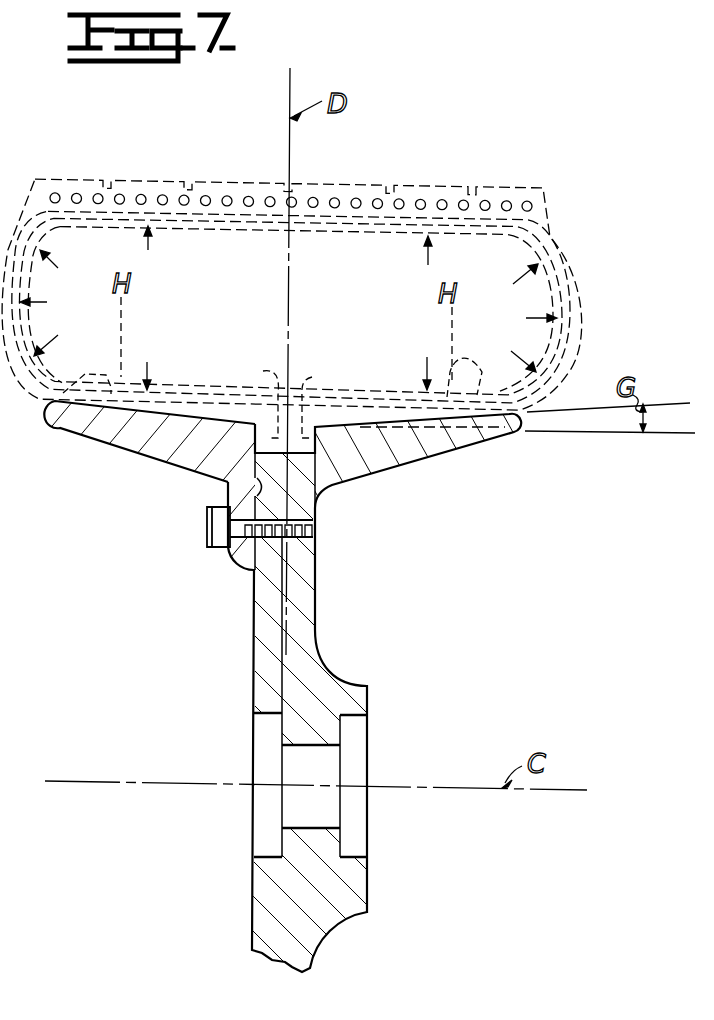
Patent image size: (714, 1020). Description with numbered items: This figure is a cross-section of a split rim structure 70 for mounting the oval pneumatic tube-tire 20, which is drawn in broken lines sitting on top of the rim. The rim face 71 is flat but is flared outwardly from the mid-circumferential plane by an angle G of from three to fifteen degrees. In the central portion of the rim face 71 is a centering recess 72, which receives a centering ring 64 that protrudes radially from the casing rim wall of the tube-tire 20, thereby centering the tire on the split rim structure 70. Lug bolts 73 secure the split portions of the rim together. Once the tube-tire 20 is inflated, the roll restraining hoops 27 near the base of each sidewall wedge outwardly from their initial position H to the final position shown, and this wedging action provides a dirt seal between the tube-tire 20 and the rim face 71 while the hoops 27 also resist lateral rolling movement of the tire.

The tube-tire 20 is at (571, 264).
The roll restraining hoop 27 is at (95, 376).
The centering ring 64 is at (324, 399).
The split rim structure 70 is at (253, 620).
The rim face 71 is at (118, 412).
The centering recess 72 is at (255, 397).
The lug bolt 73 is at (206, 509).